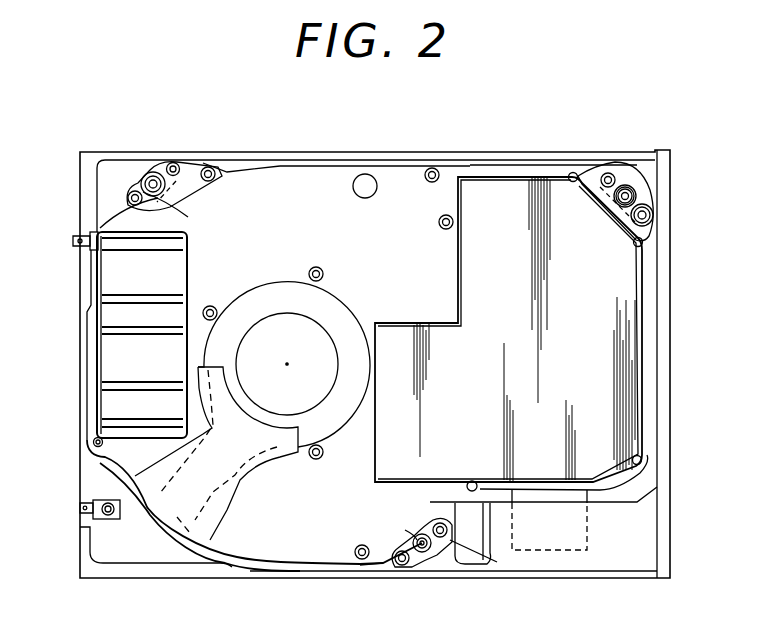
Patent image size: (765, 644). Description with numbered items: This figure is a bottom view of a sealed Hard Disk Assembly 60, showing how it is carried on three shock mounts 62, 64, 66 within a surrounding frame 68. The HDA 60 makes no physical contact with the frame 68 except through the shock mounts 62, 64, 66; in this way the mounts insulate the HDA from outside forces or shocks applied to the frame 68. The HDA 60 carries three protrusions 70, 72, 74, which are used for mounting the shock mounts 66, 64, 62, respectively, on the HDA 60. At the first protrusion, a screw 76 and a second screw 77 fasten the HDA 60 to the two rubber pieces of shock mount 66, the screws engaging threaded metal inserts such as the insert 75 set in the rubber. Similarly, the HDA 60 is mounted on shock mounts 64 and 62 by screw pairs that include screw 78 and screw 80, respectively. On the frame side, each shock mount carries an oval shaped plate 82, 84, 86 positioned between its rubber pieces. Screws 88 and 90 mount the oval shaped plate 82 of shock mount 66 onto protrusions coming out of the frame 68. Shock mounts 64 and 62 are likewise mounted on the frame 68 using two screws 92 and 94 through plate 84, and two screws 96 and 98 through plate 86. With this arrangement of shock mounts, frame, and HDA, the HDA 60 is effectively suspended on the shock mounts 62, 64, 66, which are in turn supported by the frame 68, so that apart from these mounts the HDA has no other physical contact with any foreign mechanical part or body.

The Hard Disk Assembly 60 is at (270, 540).
The shock mount 62 is at (160, 168).
The shock mount 64 is at (627, 189).
The shock mount 66 is at (430, 563).
The frame 68 is at (668, 500).
The protrusion 70 is at (447, 537).
The protrusion 72 is at (648, 198).
The protrusion 74 is at (143, 176).
The threaded metal insert 75 is at (422, 532).
The screw 76 is at (148, 200).
The screw 77 is at (417, 537).
The screw 78 is at (628, 194).
The screw 80 is at (160, 187).
The oval shaped plate 82 is at (408, 565).
The oval shaped plate 84 is at (647, 213).
The oval shaped plate 86 is at (143, 182).
The screw 88 is at (383, 570).
The screw 90 is at (435, 522).
The screw 92 is at (651, 217).
The screw 94 is at (630, 168).
The screw 96 is at (175, 162).
The screw 98 is at (125, 198).